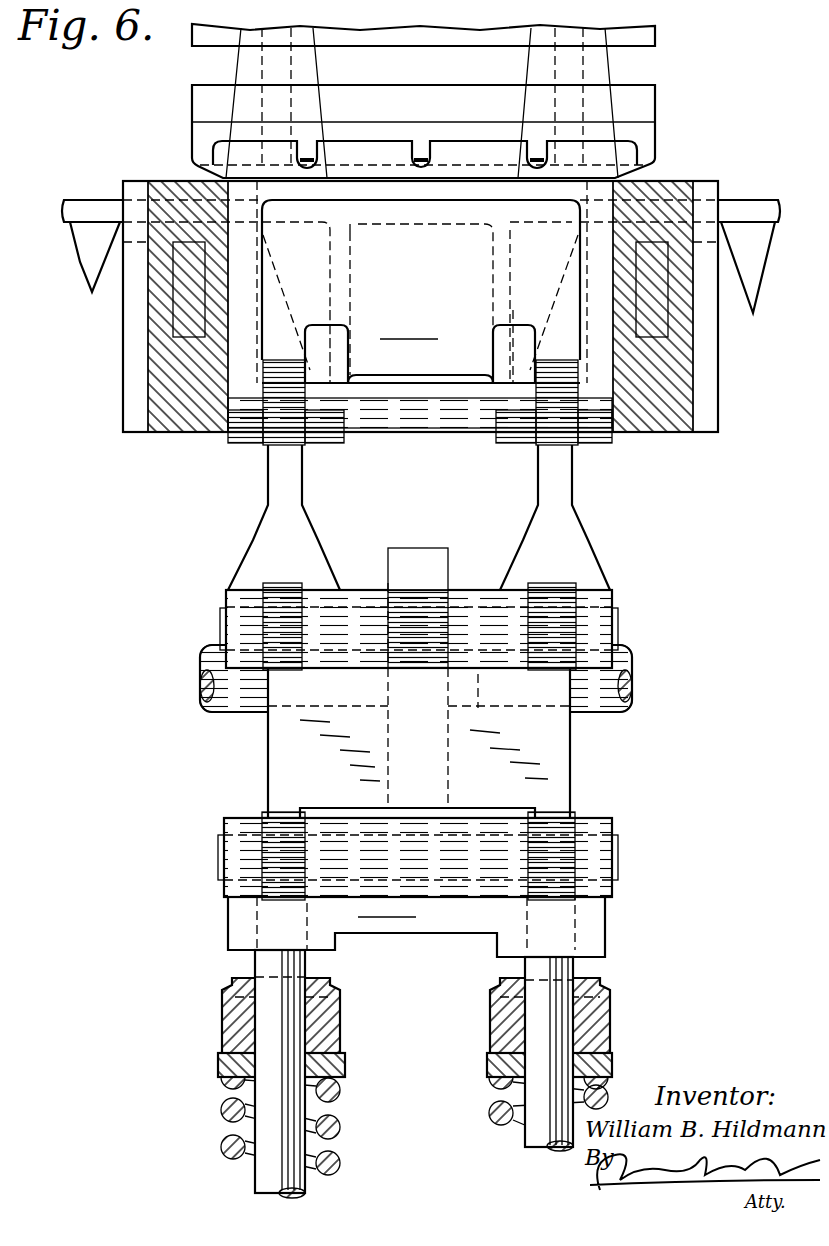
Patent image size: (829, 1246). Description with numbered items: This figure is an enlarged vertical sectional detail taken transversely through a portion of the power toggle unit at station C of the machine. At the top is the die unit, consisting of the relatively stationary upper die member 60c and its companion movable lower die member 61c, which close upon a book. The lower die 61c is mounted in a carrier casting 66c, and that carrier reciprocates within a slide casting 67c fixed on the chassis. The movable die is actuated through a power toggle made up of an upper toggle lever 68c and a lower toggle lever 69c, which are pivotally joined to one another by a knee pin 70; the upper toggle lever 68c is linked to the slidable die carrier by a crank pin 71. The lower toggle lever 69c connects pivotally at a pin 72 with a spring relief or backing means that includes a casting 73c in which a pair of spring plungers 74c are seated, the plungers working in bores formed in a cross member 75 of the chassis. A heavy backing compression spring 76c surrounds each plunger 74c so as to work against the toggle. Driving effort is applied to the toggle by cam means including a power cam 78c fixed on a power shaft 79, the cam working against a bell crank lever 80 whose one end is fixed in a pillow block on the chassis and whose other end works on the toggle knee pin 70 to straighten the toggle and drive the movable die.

The upper die member 60c is at (645, 43).
The movable die member 61c is at (640, 118).
The carrier casting 66c is at (421, 291).
The slide casting 67c is at (659, 446).
The upper toggle lever 68c is at (573, 548).
The lower toggle lever 69c is at (558, 768).
The knee pin 70 is at (617, 628).
The crank pin 71 is at (478, 415).
The pin 72 is at (616, 858).
The casting 73c is at (416, 921).
The spring plungers 74c is at (267, 1173).
The cross member 75 is at (490, 1005).
The backing compression spring 76c is at (488, 1108).
The power cam 78c is at (450, 766).
The power shaft 79 is at (632, 682).
The bell crank lever 80 is at (363, 582).